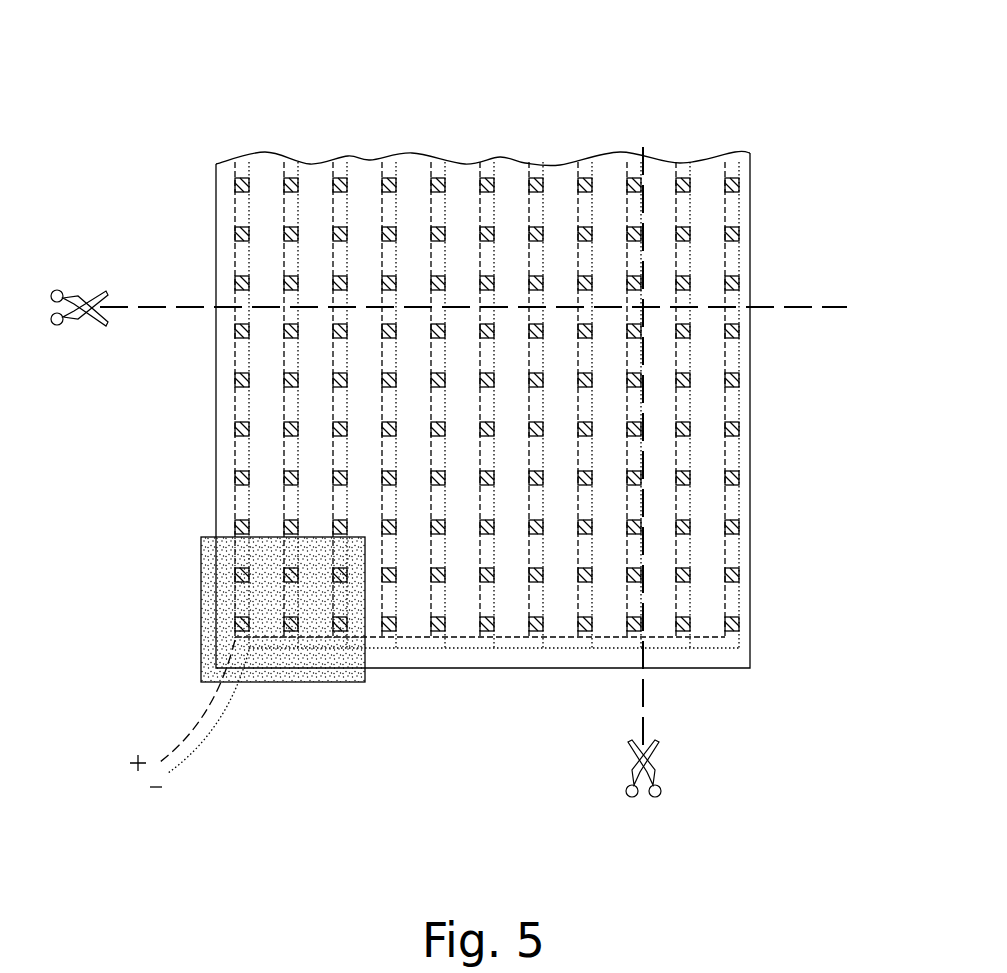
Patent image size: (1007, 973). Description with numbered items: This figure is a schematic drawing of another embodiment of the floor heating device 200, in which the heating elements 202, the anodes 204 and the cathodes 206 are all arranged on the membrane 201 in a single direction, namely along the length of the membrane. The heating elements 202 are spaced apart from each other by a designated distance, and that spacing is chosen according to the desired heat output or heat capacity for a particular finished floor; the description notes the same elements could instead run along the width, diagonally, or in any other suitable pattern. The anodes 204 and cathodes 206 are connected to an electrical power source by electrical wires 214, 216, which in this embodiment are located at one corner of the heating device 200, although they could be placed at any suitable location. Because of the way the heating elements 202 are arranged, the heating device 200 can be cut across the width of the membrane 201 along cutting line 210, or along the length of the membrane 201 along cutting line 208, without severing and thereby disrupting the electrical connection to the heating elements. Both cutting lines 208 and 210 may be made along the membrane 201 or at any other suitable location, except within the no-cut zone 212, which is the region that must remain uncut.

The heating device 200 is at (449, 408).
The membrane 201 is at (406, 359).
The heating elements 202 is at (504, 398).
The anodes 204 is at (522, 160).
The cathodes 206 is at (735, 202).
The cutting line 208 is at (645, 186).
The cutting line 210 is at (828, 308).
The no-cut zone 212 is at (263, 592).
The electrical wire 214 is at (210, 706).
The electrical wire 216 is at (218, 723).